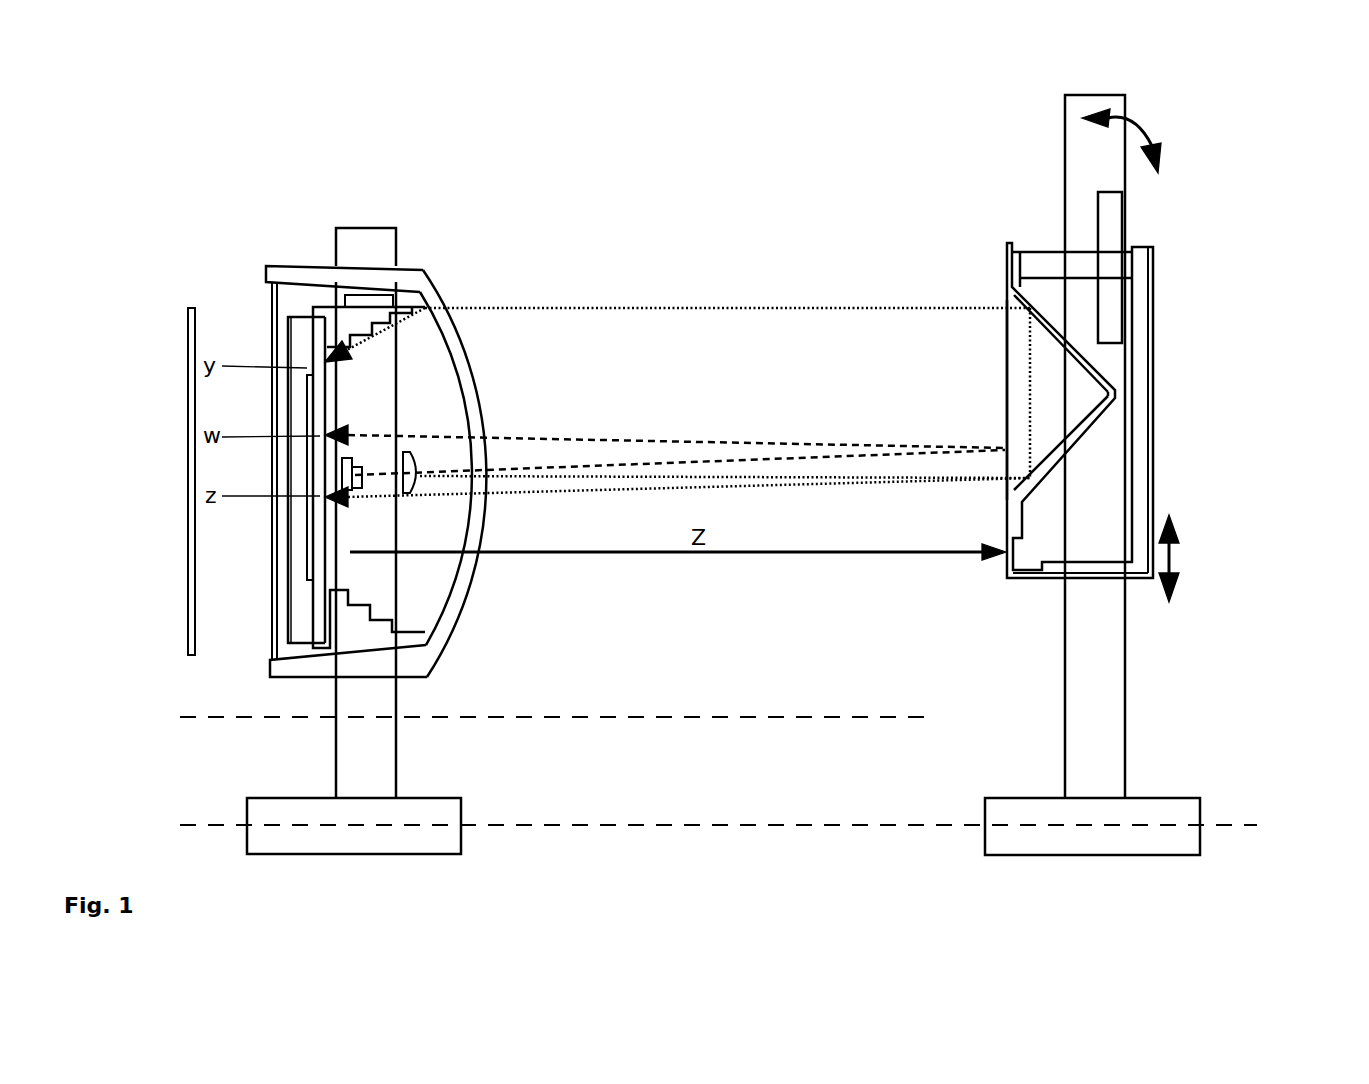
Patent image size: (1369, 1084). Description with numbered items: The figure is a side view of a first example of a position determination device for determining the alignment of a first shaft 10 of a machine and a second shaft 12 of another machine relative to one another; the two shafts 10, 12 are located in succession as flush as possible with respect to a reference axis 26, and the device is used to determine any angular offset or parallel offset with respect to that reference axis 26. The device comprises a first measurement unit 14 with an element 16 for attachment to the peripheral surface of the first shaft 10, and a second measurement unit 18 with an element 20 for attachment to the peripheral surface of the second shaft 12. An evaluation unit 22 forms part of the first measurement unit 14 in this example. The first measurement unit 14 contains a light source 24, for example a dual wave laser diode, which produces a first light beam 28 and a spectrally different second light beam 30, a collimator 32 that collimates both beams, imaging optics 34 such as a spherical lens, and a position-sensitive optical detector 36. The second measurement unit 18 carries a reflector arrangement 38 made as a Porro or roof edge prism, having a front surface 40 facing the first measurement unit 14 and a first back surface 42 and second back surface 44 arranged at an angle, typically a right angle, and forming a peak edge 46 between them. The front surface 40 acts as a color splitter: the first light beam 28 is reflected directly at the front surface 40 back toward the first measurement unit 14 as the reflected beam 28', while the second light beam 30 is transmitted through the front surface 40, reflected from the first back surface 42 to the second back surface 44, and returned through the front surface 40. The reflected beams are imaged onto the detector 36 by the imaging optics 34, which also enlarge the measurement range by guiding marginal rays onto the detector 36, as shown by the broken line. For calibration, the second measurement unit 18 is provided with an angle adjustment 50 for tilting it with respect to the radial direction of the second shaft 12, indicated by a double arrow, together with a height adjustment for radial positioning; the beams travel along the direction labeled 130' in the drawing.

The first shaft 10 is at (255, 811).
The second shaft 12 is at (1192, 808).
The first measurement unit 14 is at (299, 391).
The element for attachment 16 is at (342, 774).
The second measurement unit 18 is at (1071, 446).
The element for attachment 20 is at (1118, 660).
The evaluation unit 22 is at (270, 575).
The light source 24 is at (345, 480).
The reference axis 26 is at (712, 825).
The first light beam 28 is at (680, 290).
The reflected part of the first light beam 28' is at (676, 276).
The second light beam 30 is at (722, 472).
The collimator 32 is at (412, 487).
The imaging optics 34 is at (438, 288).
The position-sensitive optical detector 36 is at (315, 415).
The reflector arrangement 38 is at (1110, 449).
The front surface 40 is at (1005, 423).
The first back surface 42 is at (1062, 448).
The second back surface 44 is at (1095, 365).
The peak edge 46 is at (1117, 395).
The angle adjustment 50 is at (1112, 236).
The reflected light beam 130' is at (687, 228).